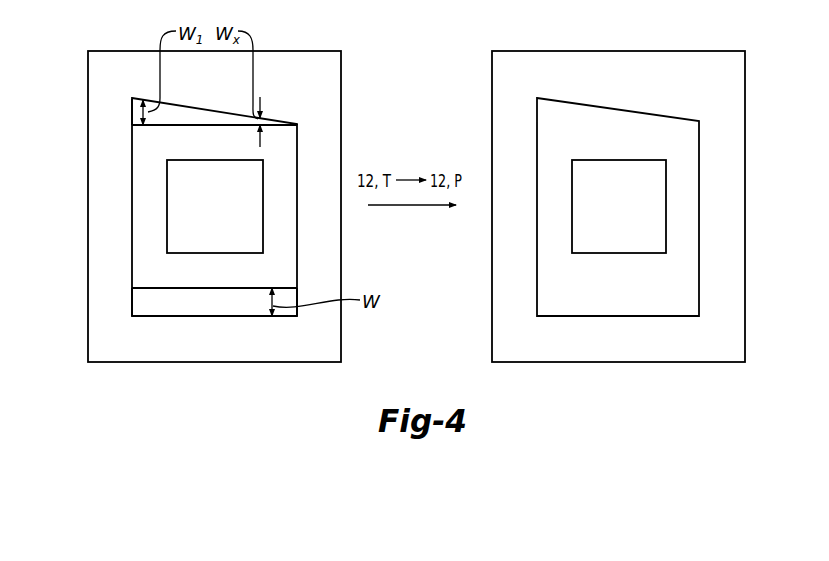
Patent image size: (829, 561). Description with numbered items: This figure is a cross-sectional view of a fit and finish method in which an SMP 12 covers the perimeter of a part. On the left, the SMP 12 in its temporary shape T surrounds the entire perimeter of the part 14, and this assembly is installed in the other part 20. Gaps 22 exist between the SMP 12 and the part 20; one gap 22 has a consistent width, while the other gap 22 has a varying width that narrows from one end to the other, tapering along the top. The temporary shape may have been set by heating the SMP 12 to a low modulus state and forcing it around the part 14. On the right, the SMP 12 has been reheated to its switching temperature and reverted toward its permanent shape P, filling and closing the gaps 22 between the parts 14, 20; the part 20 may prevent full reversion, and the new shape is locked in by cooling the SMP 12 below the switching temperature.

The part 20 is at (315, 62).
The SMP 12 is at (287, 177).
The part 14 is at (173, 218).
The gap 22 is at (131, 110).